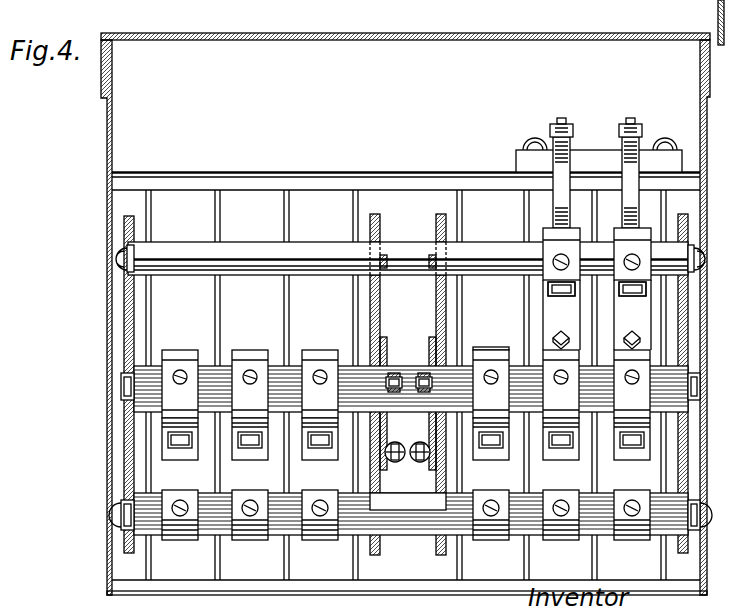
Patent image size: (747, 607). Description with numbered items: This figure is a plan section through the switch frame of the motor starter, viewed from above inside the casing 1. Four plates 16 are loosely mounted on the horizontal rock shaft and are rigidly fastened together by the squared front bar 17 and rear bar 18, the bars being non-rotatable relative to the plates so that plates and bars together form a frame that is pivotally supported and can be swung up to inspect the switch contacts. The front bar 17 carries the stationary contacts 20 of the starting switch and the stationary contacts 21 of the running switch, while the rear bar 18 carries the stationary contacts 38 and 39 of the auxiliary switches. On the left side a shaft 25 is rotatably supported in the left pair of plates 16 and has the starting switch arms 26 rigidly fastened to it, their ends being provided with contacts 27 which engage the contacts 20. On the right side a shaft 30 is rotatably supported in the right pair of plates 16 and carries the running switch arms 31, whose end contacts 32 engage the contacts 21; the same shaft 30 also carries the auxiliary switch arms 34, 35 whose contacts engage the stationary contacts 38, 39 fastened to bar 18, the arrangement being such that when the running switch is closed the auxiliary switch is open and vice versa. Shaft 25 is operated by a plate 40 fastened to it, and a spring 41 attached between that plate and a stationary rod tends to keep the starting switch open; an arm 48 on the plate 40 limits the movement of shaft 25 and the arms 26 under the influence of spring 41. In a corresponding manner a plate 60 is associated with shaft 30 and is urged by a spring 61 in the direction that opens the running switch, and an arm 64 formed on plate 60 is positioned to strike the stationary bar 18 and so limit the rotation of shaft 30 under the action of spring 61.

The casing 1 is at (431, 33).
The plates 16 is at (131, 553).
The front bar 17 is at (417, 521).
The rear bar 18 is at (404, 243).
The stationary contacts 20 is at (327, 538).
The stationary contacts 21 is at (639, 538).
The shaft 25 is at (206, 352).
The starting switch arms 26 is at (250, 384).
The contacts 27 is at (323, 449).
The shaft 30 is at (520, 366).
The running switch arms 31 is at (561, 384).
The contacts 32 is at (635, 449).
The auxiliary switch arm 34 is at (560, 306).
The auxiliary switch arm 35 is at (632, 300).
The stationary contact 38 is at (556, 243).
The stationary contact 39 is at (627, 243).
The plate 40 is at (383, 469).
The spring 41 is at (396, 441).
The arm 48 is at (384, 292).
The plate 60 is at (428, 469).
The spring 61 is at (422, 408).
The arm 64 is at (433, 305).